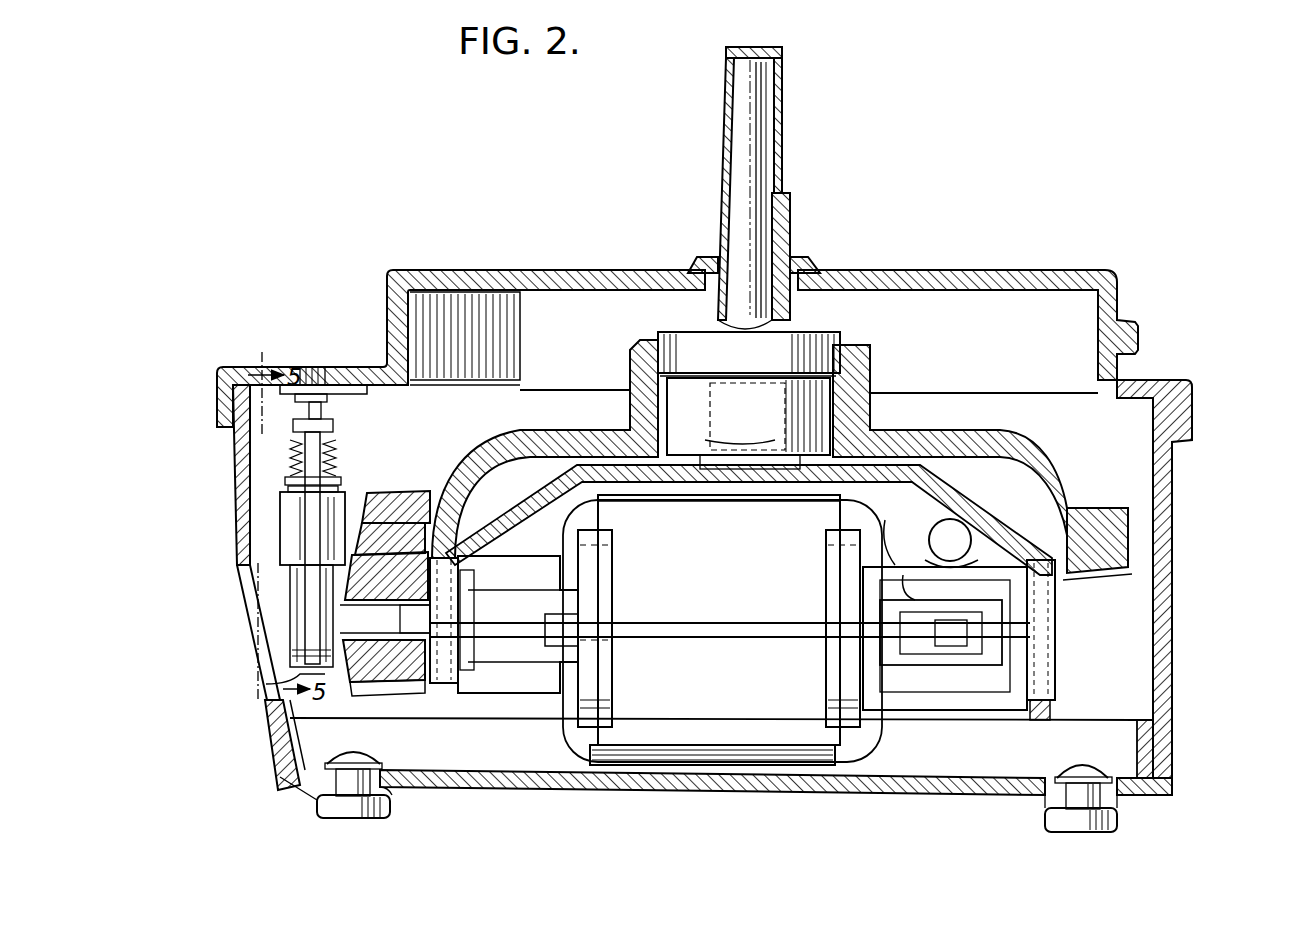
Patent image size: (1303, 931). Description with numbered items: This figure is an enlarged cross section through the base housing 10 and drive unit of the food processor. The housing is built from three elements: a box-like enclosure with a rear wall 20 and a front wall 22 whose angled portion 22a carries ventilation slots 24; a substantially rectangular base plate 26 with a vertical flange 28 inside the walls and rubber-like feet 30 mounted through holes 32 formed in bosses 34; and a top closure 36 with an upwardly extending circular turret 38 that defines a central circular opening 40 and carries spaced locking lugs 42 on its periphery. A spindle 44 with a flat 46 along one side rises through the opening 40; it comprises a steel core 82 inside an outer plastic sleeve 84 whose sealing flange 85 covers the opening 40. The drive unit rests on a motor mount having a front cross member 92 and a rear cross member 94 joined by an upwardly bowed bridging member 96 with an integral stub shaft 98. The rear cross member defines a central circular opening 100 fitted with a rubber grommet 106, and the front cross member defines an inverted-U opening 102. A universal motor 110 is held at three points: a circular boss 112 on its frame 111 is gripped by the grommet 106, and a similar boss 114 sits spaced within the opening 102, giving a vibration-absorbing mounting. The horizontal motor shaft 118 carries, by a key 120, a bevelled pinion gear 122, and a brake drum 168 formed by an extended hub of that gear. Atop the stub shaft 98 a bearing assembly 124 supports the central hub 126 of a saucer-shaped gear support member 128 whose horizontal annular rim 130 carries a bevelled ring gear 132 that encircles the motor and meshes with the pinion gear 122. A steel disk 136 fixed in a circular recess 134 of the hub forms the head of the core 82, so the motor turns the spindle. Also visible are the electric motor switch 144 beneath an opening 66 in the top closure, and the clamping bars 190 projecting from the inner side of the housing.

The base housing 10 is at (1222, 512).
The rear wall 20 is at (1170, 614).
The front wall 22 is at (240, 484).
The angled portion 22a is at (264, 733).
The ventilation slots 24 is at (250, 634).
The base plate 26 is at (710, 790).
The vertical flange 28 is at (1150, 720).
The rubber-like feet 30 is at (372, 818).
The holes 32 is at (340, 786).
The bosses 34 is at (392, 797).
The top closure 36 is at (1162, 386).
The circular turret 38 is at (390, 300).
The central circular opening 40 is at (806, 262).
The locking lugs 42 is at (1140, 336).
The spindle 44 is at (720, 188).
The flat 46 is at (784, 116).
The opening 66 is at (330, 370).
The steel core 82 is at (790, 212).
The outer plastic sleeve 84 is at (728, 106).
The sealing flange 85 is at (698, 258).
The front cross member 92 is at (445, 698).
The rear cross member 94 is at (1036, 714).
The bridging member 96 is at (936, 478).
The stub shaft 98 is at (815, 406).
The central circular opening 100 is at (1052, 688).
The opening 102 is at (430, 478).
The rubber grommet 106 is at (1048, 612).
The universal motor 110 is at (722, 628).
The frame 111 is at (792, 748).
The circular boss 112 is at (1045, 636).
The boss 114 is at (430, 690).
The motor shaft 118 is at (440, 648).
The key 120 is at (437, 620).
The bevelled pinion gear 122 is at (392, 692).
The bearing assembly 124 is at (680, 400).
The central hub 126 is at (878, 384).
The gear support member 128 is at (1040, 450).
The horizontal annular rim 130 is at (1096, 508).
The bevelled ring gear 132 is at (1168, 582).
The circular recess 134 is at (660, 340).
The steel disk 136 is at (820, 344).
The electric motor switch 144 is at (282, 536).
The brake drum 168 is at (268, 684).
The clamping bars 190 is at (334, 408).